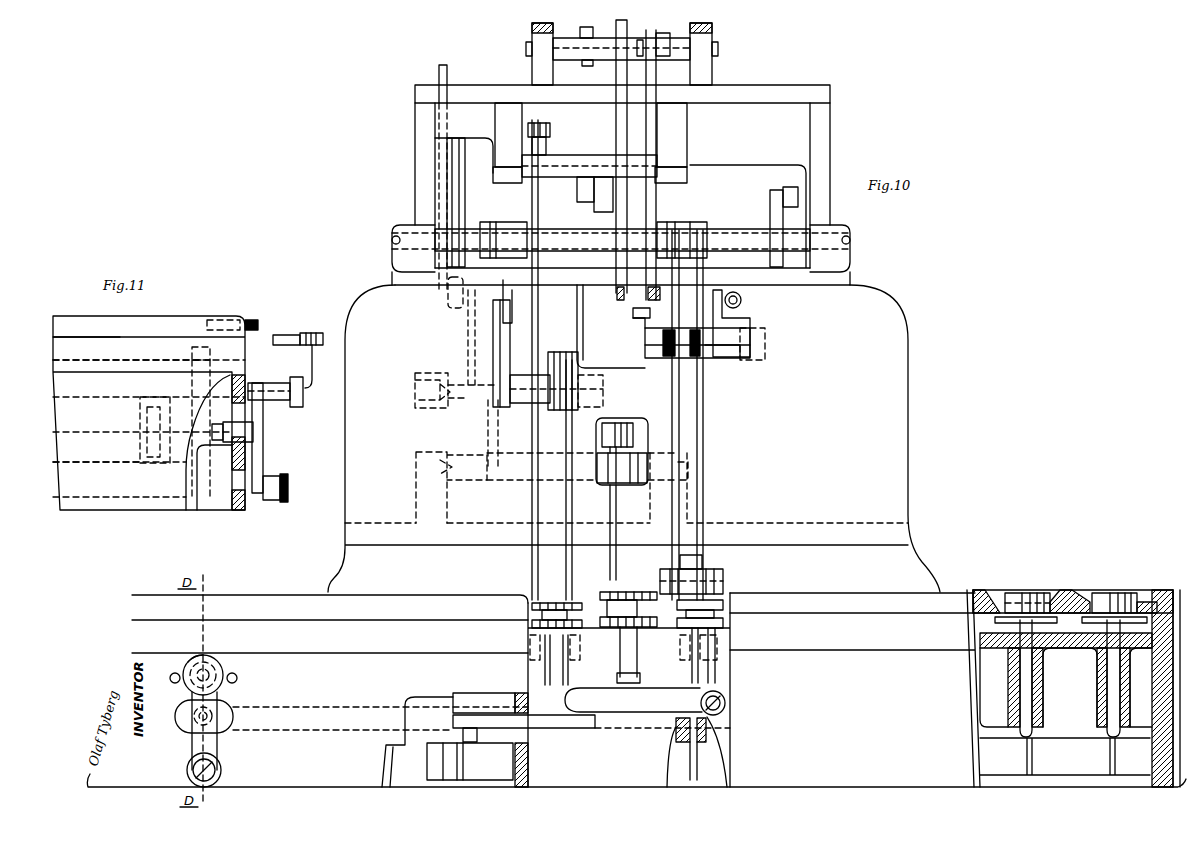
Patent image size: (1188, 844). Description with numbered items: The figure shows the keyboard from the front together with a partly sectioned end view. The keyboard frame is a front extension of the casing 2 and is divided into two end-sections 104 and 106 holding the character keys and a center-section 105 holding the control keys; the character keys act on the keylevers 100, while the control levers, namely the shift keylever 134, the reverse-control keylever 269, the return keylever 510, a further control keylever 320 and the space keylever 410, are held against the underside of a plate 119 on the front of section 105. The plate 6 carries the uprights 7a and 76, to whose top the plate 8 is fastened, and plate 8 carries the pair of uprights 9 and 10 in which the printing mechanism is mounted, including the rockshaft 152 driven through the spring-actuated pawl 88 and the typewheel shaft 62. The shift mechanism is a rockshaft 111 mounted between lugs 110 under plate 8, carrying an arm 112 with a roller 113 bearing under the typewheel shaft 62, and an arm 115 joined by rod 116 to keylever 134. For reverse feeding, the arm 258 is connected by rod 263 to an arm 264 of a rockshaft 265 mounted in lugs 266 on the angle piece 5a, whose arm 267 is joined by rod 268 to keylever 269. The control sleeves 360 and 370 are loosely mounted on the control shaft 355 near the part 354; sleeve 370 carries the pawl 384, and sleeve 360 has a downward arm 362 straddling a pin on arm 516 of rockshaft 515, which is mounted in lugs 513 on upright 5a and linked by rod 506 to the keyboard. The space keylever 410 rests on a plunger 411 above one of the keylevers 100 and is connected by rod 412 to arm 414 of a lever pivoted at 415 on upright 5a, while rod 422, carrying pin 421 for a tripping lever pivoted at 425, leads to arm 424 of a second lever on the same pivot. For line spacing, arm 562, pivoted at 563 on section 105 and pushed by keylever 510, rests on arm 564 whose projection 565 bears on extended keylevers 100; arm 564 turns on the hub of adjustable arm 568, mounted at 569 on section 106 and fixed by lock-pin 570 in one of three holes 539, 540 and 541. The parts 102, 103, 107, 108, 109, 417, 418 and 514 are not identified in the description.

In FIG. 10, the casing 2 is at (909, 553).
In FIG. 10, the angle piece (front upright) 5a is at (909, 375).
In FIG. 10, the plate 6 is at (849, 270).
In FIG. 10, the upright 7a is at (414, 160).
In FIG. 10, the upright 76 is at (831, 155).
In FIG. 10, the plate 8 is at (758, 96).
In FIG. 10, the upright 9 is at (531, 33).
In FIG. 10, the upright 10 is at (708, 38).
In FIG. 10, the typewheel shaft 62 is at (616, 120).
In FIG. 10, the spring-actuated pawl 88 is at (656, 72).
In FIG. 10, the keylevers 100 is at (428, 755).
In FIG. 11, the keylevers 100 is at (108, 470).
In FIG. 10, the pin 102 is at (478, 738).
In FIG. 10, the gear 103 is at (1024, 594).
In FIG. 10, the end-section of keyboard 104 is at (855, 688).
In FIG. 10, the center-section of keyboard 105 is at (663, 752).
In FIG. 10, the end-section of keyboard 106 is at (330, 672).
In FIG. 10, the plate 107 is at (1085, 648).
In FIG. 11, the plate 107 is at (52, 348).
In FIG. 10, the plate 108 is at (1078, 613).
In FIG. 11, the plate 108 is at (210, 319).
In FIG. 10, the boss 109 is at (1066, 592).
In FIG. 10, the lugs 110 is at (495, 122).
In FIG. 10, the rockshaft 111 is at (607, 160).
In FIG. 10, the arm 112 is at (577, 190).
In FIG. 10, the roller 113 is at (596, 212).
In FIG. 10, the arm 115 is at (551, 132).
In FIG. 10, the rod 116 is at (541, 300).
In FIG. 10, the plate 119 is at (586, 627).
In FIG. 11, the plate 119 is at (191, 355).
In FIG. 10, the shift keylever 134 is at (530, 665).
In FIG. 10, the rockshaft 152 is at (612, 60).
In FIG. 10, the arm 258 is at (448, 72).
In FIG. 10, the rod 263 is at (465, 178).
In FIG. 10, the arm 264 is at (482, 318).
In FIG. 10, the rockshaft 265 is at (522, 376).
In FIG. 10, the lugs 266 is at (434, 373).
In FIG. 10, the arm 267 is at (565, 352).
In FIG. 10, the rod 268 is at (566, 440).
In FIG. 10, the reverse-control keylever 269 is at (573, 665).
In FIG. 10, the gear 320 is at (637, 640).
In FIG. 10, the bracket 354 is at (772, 200).
In FIG. 10, the control-shaft 355 is at (745, 230).
In FIG. 10, the control-sleeve 360 is at (500, 222).
In FIG. 10, the arm 362 is at (513, 294).
In FIG. 10, the control-sleeve 370 is at (692, 222).
In FIG. 10, the pawl 384 is at (693, 270).
In FIG. 10, the space keylever 410 is at (691, 664).
In FIG. 11, the space keylever 410 is at (112, 366).
In FIG. 10, the plunger 411 is at (686, 740).
In FIG. 11, the plunger 411 is at (150, 401).
In FIG. 10, the rod 412 is at (672, 418).
In FIG. 10, the arm 414 is at (633, 312).
In FIG. 10, the pivot 415 is at (766, 332).
In FIG. 10, the arm 417 is at (723, 324).
In FIG. 10, the screw 418 is at (737, 294).
In FIG. 10, the pin 421 is at (703, 560).
In FIG. 10, the rod 422 is at (704, 446).
In FIG. 10, the arm 424 is at (735, 358).
In FIG. 10, the pivot 425 is at (724, 578).
In FIG. 10, the rod 506 is at (611, 522).
In FIG. 10, the return keylever 510 is at (622, 640).
In FIG. 10, the lugs 513 is at (416, 490).
In FIG. 10, the gear unit 514 is at (636, 447).
In FIG. 10, the rockshaft 515 is at (507, 480).
In FIG. 10, the arm 516 is at (484, 416).
In FIG. 10, the hole 539 is at (164, 669).
In FIG. 10, the hole 540 is at (210, 668).
In FIG. 10, the hole 541 is at (237, 674).
In FIG. 10, the arm 562 is at (640, 704).
In FIG. 10, the pivot 563 is at (727, 702).
In FIG. 10, the arm 564 is at (562, 729).
In FIG. 11, the arm 564 is at (212, 432).
In FIG. 10, the projection 565 is at (400, 740).
In FIG. 10, the adjustable arm 568 is at (218, 742).
In FIG. 11, the adjustable arm 568 is at (264, 450).
In FIG. 10, the mounting pivot 569 is at (221, 770).
In FIG. 11, the mounting pivot 569 is at (289, 486).
In FIG. 10, the lock-pin 570 is at (197, 661).
In FIG. 11, the lock-pin 570 is at (304, 390).